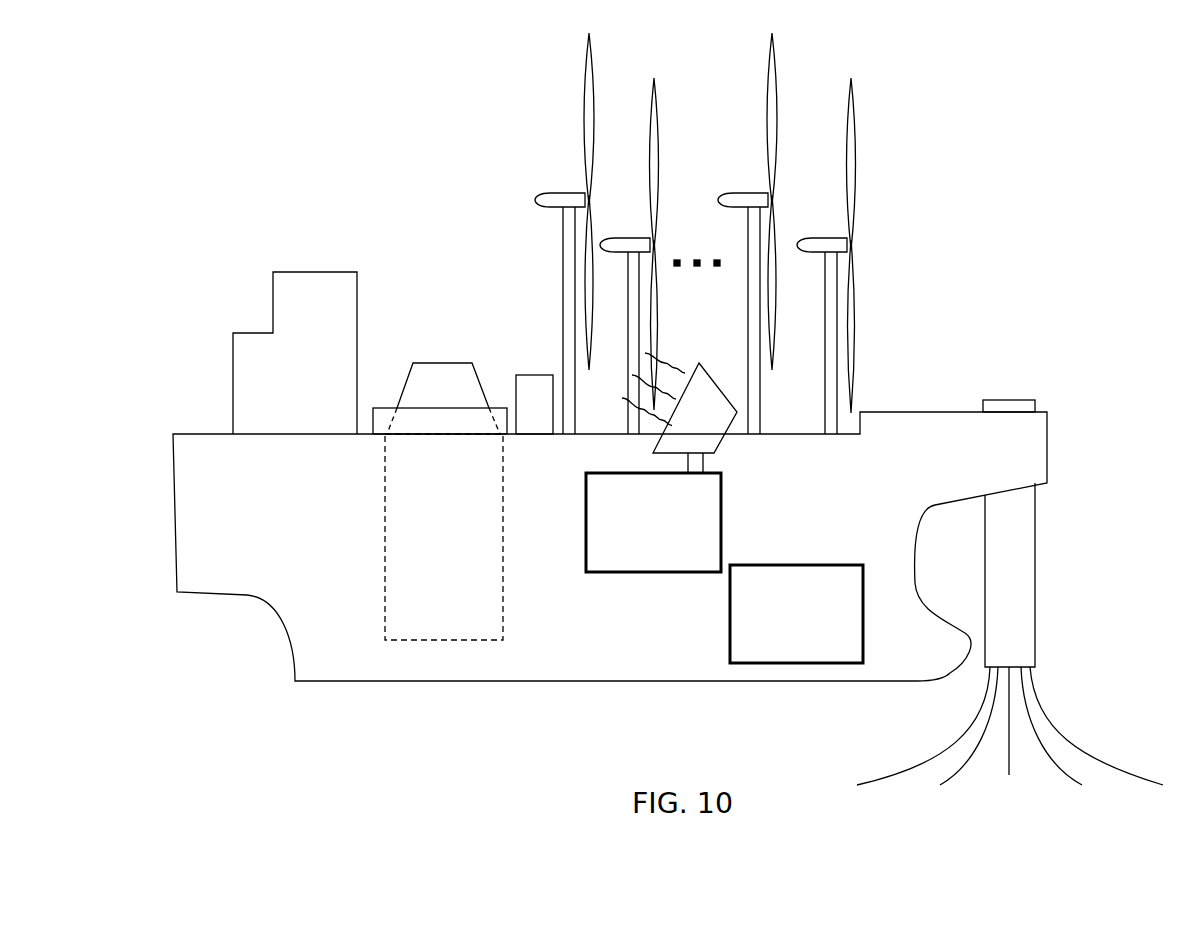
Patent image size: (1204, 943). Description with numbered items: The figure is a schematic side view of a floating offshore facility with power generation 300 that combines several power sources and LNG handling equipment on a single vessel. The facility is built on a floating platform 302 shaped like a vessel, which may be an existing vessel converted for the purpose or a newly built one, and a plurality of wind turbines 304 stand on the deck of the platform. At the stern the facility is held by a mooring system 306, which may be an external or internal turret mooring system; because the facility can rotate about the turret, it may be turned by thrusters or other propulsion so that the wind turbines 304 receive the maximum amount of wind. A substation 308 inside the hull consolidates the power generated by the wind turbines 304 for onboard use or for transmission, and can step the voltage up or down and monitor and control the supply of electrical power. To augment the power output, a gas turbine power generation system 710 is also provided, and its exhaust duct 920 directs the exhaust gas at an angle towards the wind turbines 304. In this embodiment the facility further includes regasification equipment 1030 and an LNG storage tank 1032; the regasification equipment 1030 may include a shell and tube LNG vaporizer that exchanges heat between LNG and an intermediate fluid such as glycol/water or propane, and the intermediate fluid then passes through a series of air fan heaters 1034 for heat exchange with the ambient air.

The floating offshore facility 300 is at (1030, 160).
The floating platform 302 is at (932, 427).
The wind turbines 304 is at (855, 120).
The mooring system 306 is at (1027, 550).
The substation 308 is at (796, 614).
The gas turbine power generation system 710 is at (653, 522).
The exhaust duct 920 is at (704, 383).
The regasification equipment 1030 is at (538, 390).
The LNG storage tank 1032 is at (444, 537).
The air fan heaters 1034 is at (415, 418).